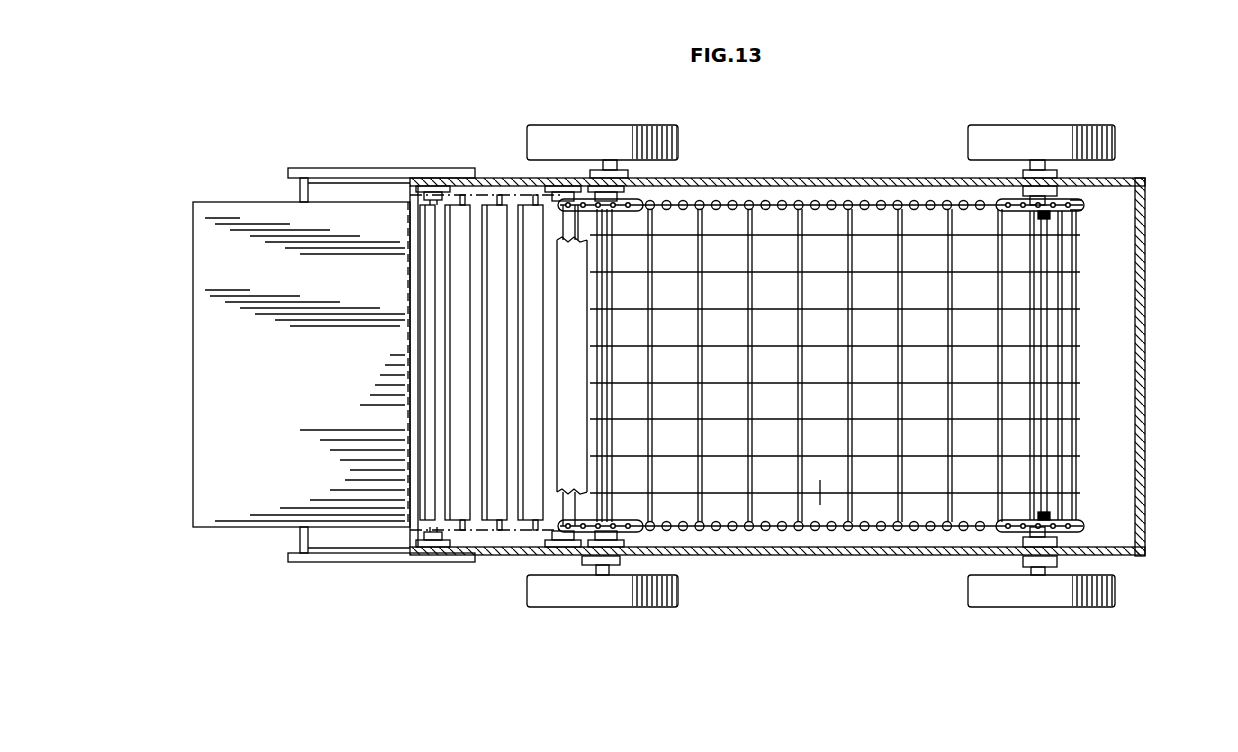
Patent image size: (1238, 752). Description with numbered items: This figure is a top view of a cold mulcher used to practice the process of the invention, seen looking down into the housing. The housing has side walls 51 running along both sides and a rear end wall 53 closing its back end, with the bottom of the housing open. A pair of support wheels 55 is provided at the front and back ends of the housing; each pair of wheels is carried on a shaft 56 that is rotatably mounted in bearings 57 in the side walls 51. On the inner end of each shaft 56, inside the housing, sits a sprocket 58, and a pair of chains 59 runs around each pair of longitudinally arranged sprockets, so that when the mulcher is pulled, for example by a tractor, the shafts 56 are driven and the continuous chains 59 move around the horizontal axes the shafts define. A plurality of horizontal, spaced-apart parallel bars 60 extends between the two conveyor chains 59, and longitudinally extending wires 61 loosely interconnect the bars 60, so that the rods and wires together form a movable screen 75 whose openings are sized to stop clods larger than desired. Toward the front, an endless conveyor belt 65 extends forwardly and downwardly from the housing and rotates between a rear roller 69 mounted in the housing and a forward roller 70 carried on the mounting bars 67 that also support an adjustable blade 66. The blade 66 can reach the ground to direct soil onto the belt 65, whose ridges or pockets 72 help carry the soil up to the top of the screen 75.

The side walls 51 is at (845, 181).
The rear end wall 53 is at (1146, 332).
The support wheels 55 is at (562, 132).
The shafts 56 is at (630, 175).
The bearings 57 is at (1022, 182).
The sprocket 58 is at (1073, 210).
The chains 59 is at (775, 201).
The bars 60 is at (896, 383).
The wires 61 is at (1020, 312).
The endless conveyor belt 65 is at (478, 556).
The adjustable blade 66 is at (197, 332).
The mounting bars 67 is at (336, 172).
The rear roller 69 is at (548, 192).
The forward roller 70 is at (442, 190).
The ridges or pockets 72 is at (493, 297).
The screen 75 is at (828, 482).